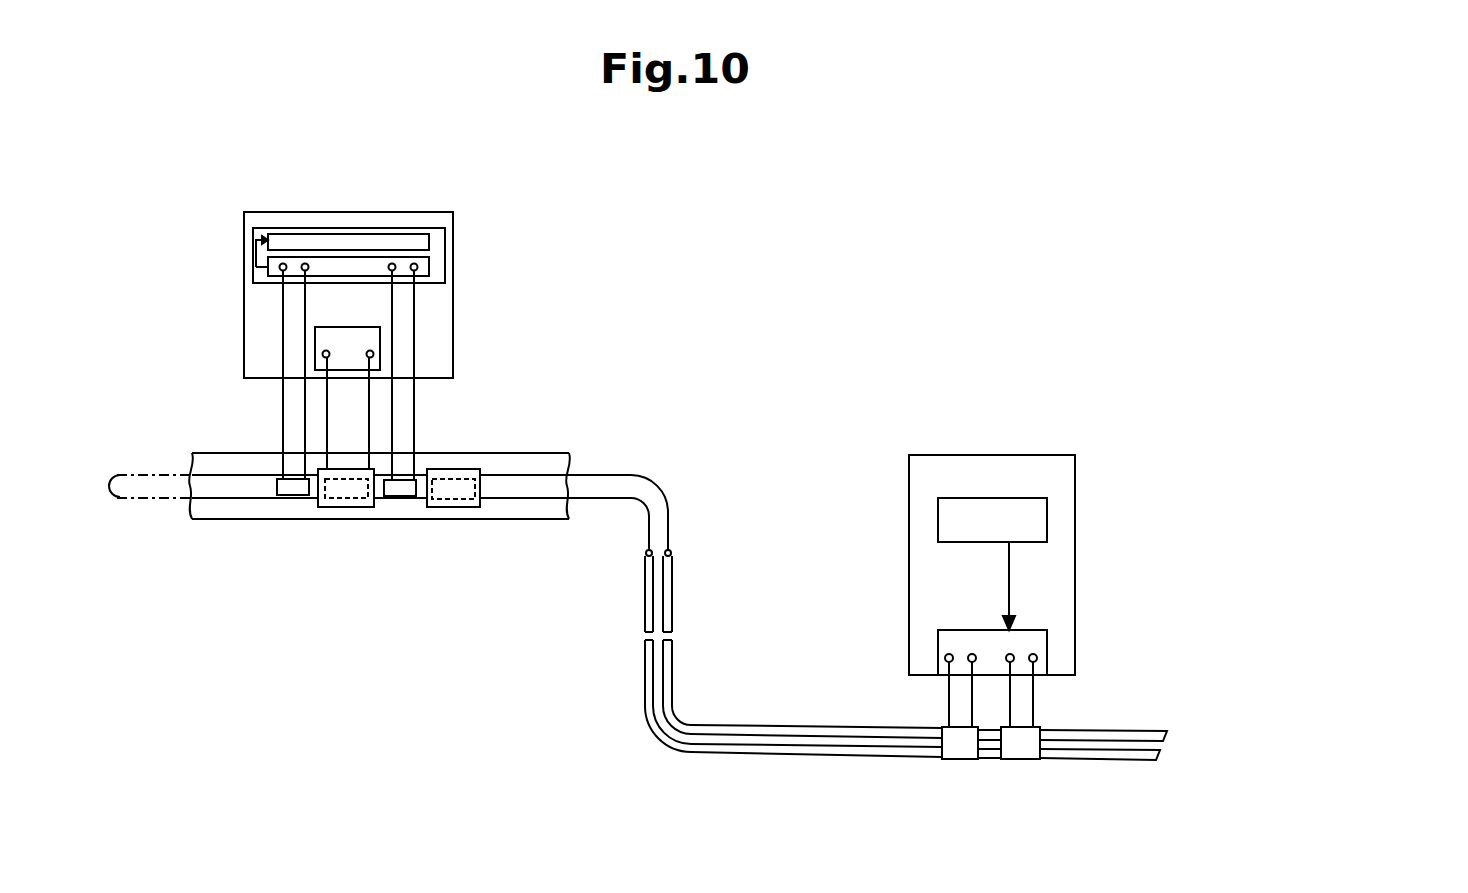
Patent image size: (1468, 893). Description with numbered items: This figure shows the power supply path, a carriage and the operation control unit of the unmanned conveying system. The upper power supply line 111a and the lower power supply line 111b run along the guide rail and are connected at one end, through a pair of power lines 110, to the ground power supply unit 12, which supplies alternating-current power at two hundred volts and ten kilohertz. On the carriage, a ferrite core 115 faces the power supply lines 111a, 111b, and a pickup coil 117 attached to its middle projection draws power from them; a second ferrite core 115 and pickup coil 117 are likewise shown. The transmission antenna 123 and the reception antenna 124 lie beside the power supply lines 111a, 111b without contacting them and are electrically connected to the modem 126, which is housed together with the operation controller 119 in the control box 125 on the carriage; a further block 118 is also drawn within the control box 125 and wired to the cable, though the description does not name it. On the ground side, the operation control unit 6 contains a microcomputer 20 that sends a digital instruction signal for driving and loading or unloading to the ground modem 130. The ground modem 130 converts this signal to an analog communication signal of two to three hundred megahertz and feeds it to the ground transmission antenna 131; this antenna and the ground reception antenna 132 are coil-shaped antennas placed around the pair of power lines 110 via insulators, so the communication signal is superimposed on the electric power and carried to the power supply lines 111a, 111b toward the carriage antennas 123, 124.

The control box 125 is at (323, 228).
The operation controller 119 is at (429, 242).
The modem 126 is at (429, 267).
The temperature sensor 118 is at (328, 327).
The transmission antenna 123 is at (288, 495).
The reception antenna 124 is at (398, 496).
The ferrite core 115 is at (327, 507).
The pickup coil 117 is at (347, 502).
The upper power supply line 111a is at (603, 475).
The lower power supply line 111b is at (600, 502).
The power lines 110 is at (647, 583).
The operation control unit 6 is at (993, 455).
The microcomputer 20 is at (1047, 520).
The ground modem 130 is at (975, 633).
The ground transmission antenna 131 is at (960, 759).
The ground reception antenna 132 is at (1020, 759).
The power supply unit 12 is at (1250, 747).